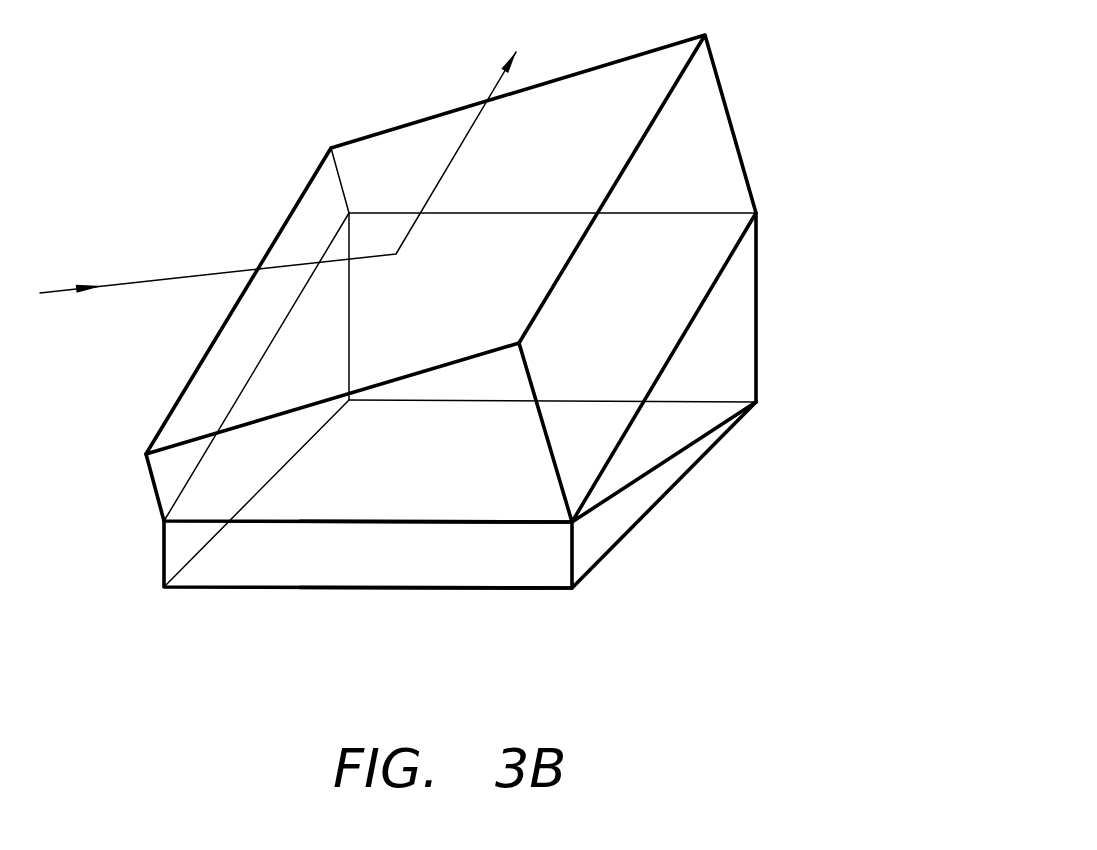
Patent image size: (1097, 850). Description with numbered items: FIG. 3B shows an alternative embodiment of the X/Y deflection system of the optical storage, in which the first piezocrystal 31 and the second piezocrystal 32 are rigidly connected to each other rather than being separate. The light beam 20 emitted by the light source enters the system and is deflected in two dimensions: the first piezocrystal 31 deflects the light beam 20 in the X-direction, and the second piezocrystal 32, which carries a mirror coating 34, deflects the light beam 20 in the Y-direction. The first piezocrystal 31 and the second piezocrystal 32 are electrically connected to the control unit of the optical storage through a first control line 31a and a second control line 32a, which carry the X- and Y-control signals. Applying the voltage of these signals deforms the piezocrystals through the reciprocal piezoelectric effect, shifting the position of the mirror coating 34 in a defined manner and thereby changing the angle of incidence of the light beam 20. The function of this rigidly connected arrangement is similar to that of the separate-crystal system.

The light beam 20 is at (60, 292).
The mirror coating 34 is at (200, 405).
The second piezocrystal 32 is at (148, 492).
The first piezocrystal 31 is at (163, 563).
The second control line 32a is at (506, 528).
The first control line 31a is at (442, 594).